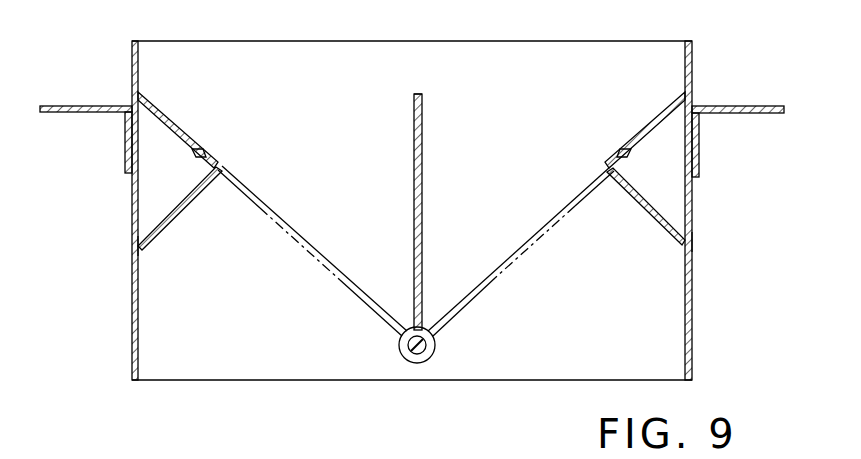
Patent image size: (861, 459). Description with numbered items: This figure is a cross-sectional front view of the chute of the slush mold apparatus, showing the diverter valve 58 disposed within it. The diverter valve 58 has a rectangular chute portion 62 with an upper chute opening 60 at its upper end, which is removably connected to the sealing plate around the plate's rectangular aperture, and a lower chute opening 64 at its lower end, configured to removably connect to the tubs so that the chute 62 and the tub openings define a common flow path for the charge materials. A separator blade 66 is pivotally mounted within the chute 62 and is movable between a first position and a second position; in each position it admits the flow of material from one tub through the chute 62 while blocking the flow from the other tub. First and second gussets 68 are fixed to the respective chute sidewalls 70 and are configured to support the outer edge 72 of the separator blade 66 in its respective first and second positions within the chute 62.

The diverter valve 58 is at (421, 223).
The upper chute opening 60 is at (137, 58).
The rectangular chute portion 62 is at (138, 293).
The lower chute opening 64 is at (138, 365).
The separator blade 66 is at (413, 163).
The gussets 68 is at (165, 214).
The chute sidewalls 70 is at (138, 256).
The outer edge 72 is at (419, 105).